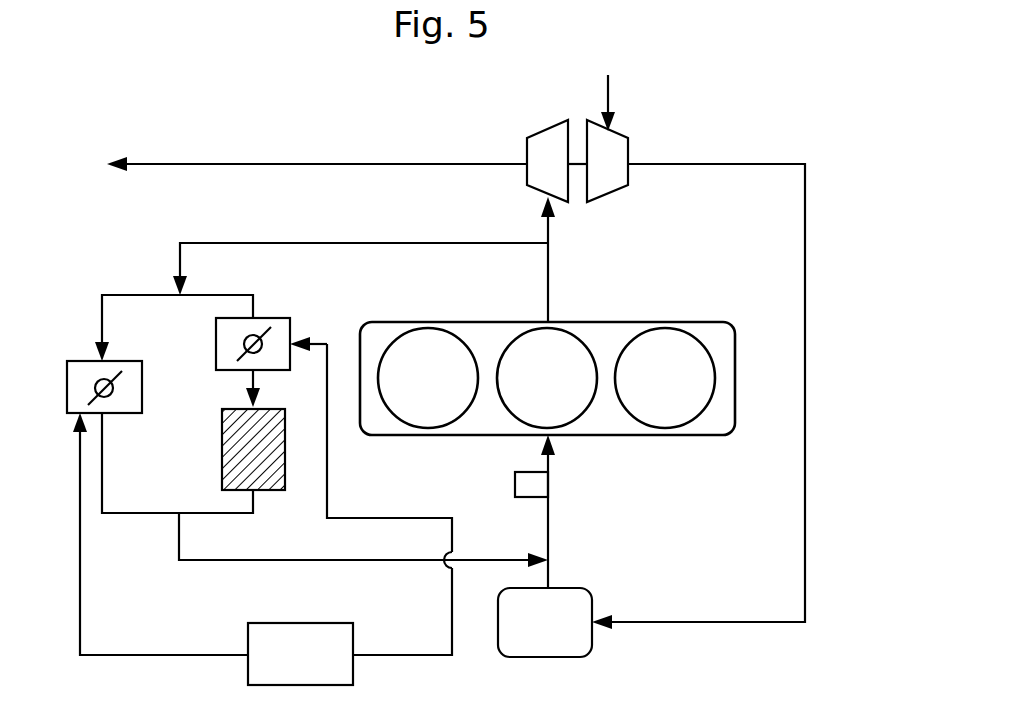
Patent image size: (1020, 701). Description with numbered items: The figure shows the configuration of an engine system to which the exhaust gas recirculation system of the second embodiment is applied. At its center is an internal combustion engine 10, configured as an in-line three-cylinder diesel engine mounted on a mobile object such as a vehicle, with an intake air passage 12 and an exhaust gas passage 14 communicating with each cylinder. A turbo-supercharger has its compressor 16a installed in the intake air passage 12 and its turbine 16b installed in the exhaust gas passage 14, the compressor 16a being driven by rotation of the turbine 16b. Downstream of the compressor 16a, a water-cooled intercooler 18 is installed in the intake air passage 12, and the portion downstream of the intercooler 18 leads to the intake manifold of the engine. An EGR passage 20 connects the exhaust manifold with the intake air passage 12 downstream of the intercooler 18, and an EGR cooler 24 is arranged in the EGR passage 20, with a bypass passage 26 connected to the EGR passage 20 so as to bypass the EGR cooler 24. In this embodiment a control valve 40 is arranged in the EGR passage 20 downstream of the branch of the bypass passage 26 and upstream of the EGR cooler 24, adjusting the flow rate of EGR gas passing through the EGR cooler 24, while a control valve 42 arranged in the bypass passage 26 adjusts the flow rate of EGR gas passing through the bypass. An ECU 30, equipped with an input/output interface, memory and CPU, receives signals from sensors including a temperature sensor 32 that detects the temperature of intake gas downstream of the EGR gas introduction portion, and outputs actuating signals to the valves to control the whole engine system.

The internal combustion engine 10 is at (722, 322).
The intake air passage 12 is at (805, 164).
The exhaust gas passage 14 is at (548, 255).
The compressor 16a is at (628, 136).
The turbine 16b is at (527, 135).
The intercooler 18 is at (585, 588).
The EGR passage 20 is at (400, 243).
The EGR cooler 24 is at (222, 428).
The bypass passage 26 is at (102, 480).
The electronic control unit (ECU) 30 is at (318, 624).
The temperature sensor 32 is at (515, 472).
The control valve 40 is at (283, 318).
The control valve 42 is at (143, 362).